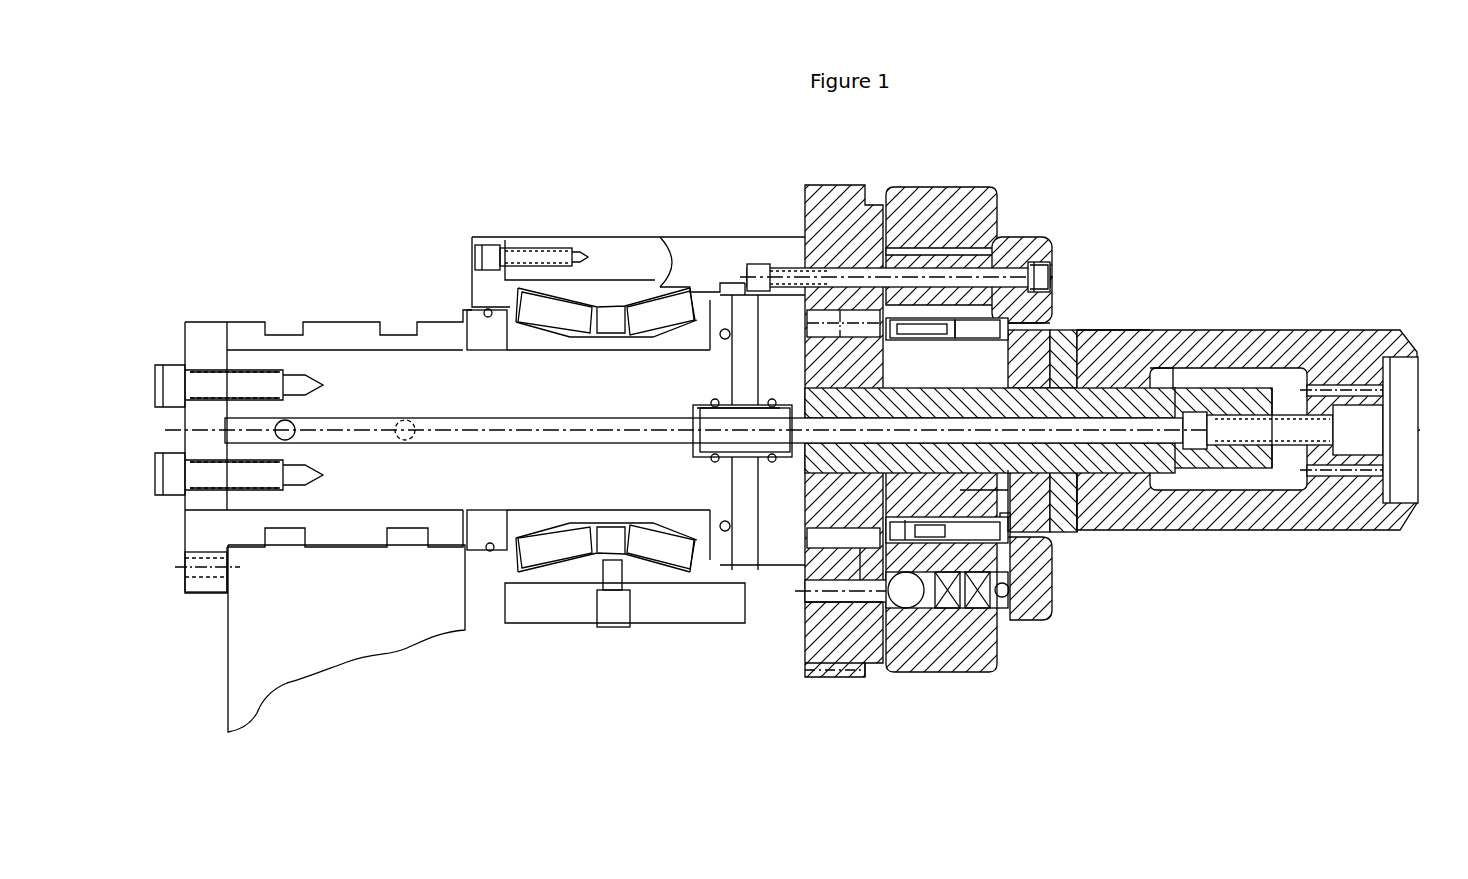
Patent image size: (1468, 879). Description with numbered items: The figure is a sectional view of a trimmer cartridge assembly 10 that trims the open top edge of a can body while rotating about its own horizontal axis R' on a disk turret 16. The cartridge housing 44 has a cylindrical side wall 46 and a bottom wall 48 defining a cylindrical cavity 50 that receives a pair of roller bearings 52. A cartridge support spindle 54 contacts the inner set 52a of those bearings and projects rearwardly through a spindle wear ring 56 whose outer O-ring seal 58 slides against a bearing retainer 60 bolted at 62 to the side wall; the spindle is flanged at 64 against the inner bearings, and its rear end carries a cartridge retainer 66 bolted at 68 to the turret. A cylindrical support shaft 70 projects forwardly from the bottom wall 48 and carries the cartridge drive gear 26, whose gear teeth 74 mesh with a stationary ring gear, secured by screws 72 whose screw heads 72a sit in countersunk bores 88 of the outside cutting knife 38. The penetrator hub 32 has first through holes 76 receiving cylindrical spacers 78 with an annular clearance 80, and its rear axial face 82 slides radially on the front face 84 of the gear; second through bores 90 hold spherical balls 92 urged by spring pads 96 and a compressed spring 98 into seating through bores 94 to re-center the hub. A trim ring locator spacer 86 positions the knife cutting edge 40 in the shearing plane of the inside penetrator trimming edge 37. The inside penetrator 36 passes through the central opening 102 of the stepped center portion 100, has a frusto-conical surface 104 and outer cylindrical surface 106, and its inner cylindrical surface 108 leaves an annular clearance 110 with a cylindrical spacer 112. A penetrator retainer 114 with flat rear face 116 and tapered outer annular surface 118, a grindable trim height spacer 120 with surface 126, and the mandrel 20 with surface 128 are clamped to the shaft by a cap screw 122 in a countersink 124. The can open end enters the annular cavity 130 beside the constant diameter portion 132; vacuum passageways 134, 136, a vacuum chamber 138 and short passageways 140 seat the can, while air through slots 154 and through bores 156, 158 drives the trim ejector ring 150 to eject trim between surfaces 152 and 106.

The trimmer cartridge assembly 10 is at (1140, 690).
The disk turret 16 is at (280, 656).
The mandrel 20 is at (1333, 302).
The cartridge drive gear 26 is at (842, 700).
The penetrator hub 32 is at (935, 715).
The inside penetrator 36 is at (1065, 500).
The inside penetrator trimming edge 37 is at (1010, 526).
The outside cutting knife 38 is at (1060, 218).
The cutting edge 40 is at (1045, 558).
The cartridge housing 44 is at (590, 214).
The cylindrical side wall 46 is at (612, 258).
The bottom wall 48 is at (800, 354).
The cylindrical cavity 50 is at (666, 252).
The roller bearings 52 is at (540, 372).
The inner set of roller bearings 52a is at (572, 342).
The cartridge support spindle 54 is at (384, 508).
The spindle wear ring 56 is at (470, 535).
The outer O-ring seal 58 is at (478, 560).
The bearing retainer 60 is at (478, 288).
The bolt 62 is at (527, 256).
The flange 64 is at (722, 340).
The cartridge retainer 66 is at (345, 312).
The bolt 68 is at (205, 578).
The cylindrical support shaft 70 is at (1120, 382).
The screws 72 is at (790, 258).
The screw head 72a is at (1040, 270).
The gear teeth 74 is at (836, 185).
The first through holes 76 is at (941, 255).
The cylindrical spacers 78 is at (896, 260).
The annular clearance 80 is at (990, 250).
The rear axial face 82 is at (865, 670).
The front face 84 is at (862, 562).
The trim ring locator spacer 86 is at (1003, 615).
The countersunk bore 88 is at (1052, 278).
The second through bores 90 is at (965, 565).
The spherical ball 92 is at (815, 672).
The seating through bore 94 is at (812, 608).
The spring pads 96 is at (942, 608).
The compressed spring 98 is at (960, 608).
The stepped center portion 100 is at (895, 535).
The central opening 102 is at (886, 350).
The frusto-conical surface 104 is at (958, 342).
The outer cylindrical surface 106 is at (1026, 359).
The inner cylindrical surface 108 is at (915, 500).
The annular clearance 110 is at (962, 488).
The cylindrical spacer 112 is at (1012, 505).
The penetrator retainer 114 is at (1065, 480).
The flat rear face 116 is at (1000, 400).
The outer annular surface 118 is at (1075, 374).
The grindable trim height spacer 120 is at (1090, 510).
The cap screw 122 is at (1412, 500).
The countersink 124 is at (1370, 478).
The outer cylindrical surface 126 is at (1080, 330).
The outer cylindrical surface 128 is at (1213, 330).
The annular cavity 130 is at (935, 352).
The constant diameter portion 132 is at (1012, 590).
The vacuum passageway 134 is at (490, 445).
The vacuum passageway 136 is at (1165, 425).
The vacuum chamber 138 is at (1282, 495).
The vacuum passageways 140 is at (1350, 385).
The trim ejector ring 150 is at (1040, 536).
The surface 152 is at (1035, 298).
The slots 154 is at (776, 380).
The through bores 156 is at (845, 337).
The through bores 158 is at (905, 525).
The axis of rotation R' is at (567, 466).